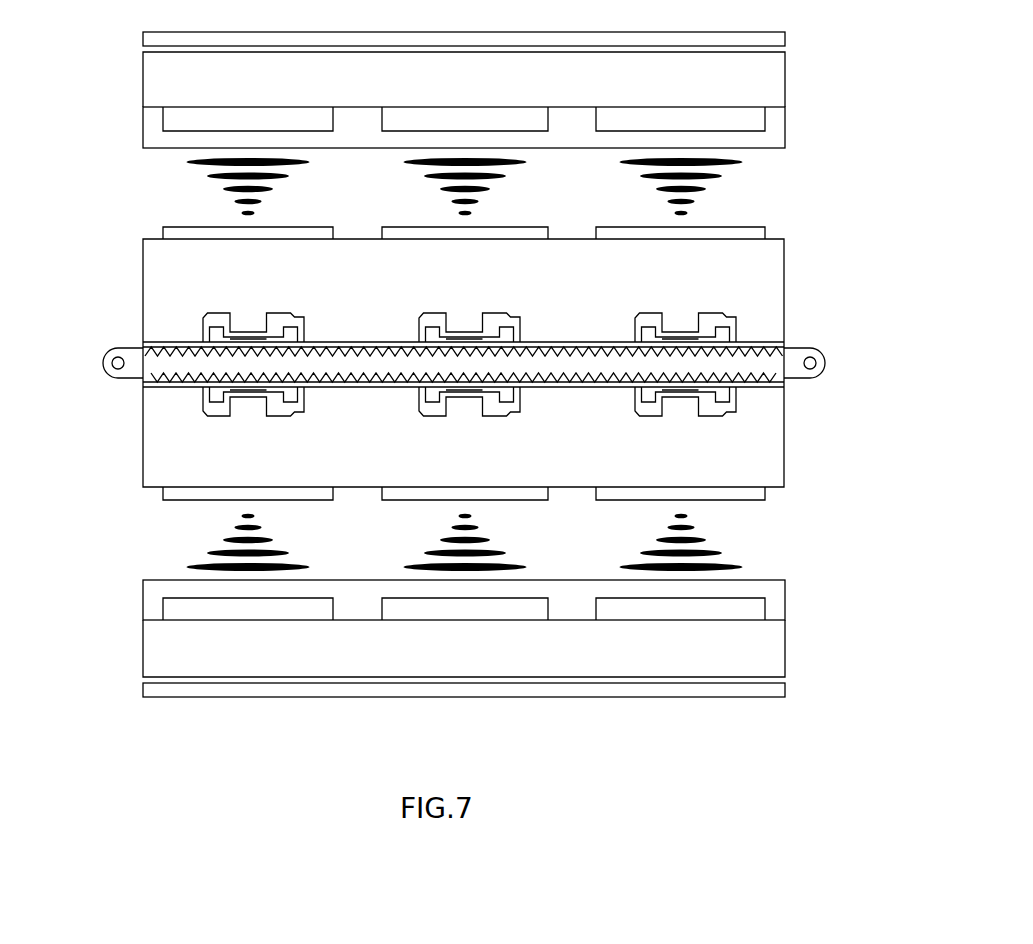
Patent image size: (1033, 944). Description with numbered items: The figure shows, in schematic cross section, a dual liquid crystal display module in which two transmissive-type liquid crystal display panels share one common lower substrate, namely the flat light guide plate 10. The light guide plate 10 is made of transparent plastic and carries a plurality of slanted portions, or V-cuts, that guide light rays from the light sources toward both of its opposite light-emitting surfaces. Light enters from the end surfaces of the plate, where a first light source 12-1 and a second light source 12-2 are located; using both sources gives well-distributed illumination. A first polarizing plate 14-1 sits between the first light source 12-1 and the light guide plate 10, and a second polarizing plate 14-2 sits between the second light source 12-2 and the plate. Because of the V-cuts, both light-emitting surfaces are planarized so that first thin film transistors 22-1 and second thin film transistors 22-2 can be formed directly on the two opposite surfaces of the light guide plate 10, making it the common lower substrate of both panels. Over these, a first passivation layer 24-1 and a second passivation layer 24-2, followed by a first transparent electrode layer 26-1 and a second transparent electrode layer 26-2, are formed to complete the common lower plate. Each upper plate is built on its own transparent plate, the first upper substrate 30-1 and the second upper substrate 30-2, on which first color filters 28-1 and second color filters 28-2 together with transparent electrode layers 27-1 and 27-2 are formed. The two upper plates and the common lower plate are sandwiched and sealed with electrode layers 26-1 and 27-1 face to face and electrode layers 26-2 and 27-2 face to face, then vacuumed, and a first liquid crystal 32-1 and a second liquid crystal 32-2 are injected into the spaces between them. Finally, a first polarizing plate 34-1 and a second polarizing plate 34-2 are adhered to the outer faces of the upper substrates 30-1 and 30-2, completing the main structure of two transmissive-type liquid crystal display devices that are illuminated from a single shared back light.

The light guide plate 10 is at (737, 362).
The first light source 12-1 is at (118, 350).
The second light source 12-2 is at (818, 366).
The first polarizing plate 14-1 is at (140, 370).
The second polarizing plate 14-2 is at (798, 373).
The first thin film transistors 22-1 is at (723, 322).
The second thin film transistors 22-2 is at (718, 417).
The first passivation layer 24-1 is at (755, 277).
The second passivation layer 24-2 is at (750, 467).
The first lower transparent electrode layer 26-1 is at (765, 230).
The second lower transparent electrode layer 26-2 is at (735, 498).
The first upper transparent electrode layer 27-1 is at (777, 133).
The second upper transparent electrode layer 27-2 is at (773, 603).
The first color filters 28-1 is at (707, 118).
The second color filters 28-2 is at (710, 608).
The first upper substrate 30-1 is at (762, 87).
The second upper substrate 30-2 is at (745, 655).
The first liquid crystal 32-1 is at (198, 185).
The second liquid crystal 32-2 is at (188, 535).
The first polarizing plate 34-1 is at (768, 41).
The second polarizing plate 34-2 is at (743, 695).